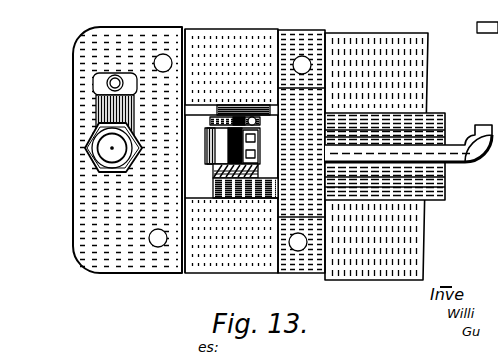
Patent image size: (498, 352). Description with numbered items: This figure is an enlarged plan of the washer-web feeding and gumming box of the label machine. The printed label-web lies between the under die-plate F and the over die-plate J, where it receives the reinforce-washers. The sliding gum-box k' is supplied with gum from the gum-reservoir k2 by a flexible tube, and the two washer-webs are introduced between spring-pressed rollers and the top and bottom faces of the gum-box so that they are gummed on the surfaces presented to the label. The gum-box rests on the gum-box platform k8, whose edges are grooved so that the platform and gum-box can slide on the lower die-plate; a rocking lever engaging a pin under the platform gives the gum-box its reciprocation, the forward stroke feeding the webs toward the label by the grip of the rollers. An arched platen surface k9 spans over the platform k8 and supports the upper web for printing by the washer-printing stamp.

The over die-plate J is at (97, 31).
The under die-plate F is at (220, 33).
The gum-reservoir k2 is at (209, 130).
The sliding gum-box k' is at (231, 142).
The gum-box platform k8 is at (440, 117).
The arched platen surface k9 is at (308, 112).